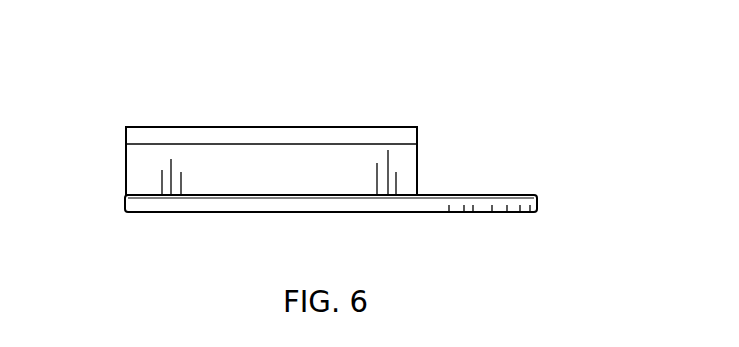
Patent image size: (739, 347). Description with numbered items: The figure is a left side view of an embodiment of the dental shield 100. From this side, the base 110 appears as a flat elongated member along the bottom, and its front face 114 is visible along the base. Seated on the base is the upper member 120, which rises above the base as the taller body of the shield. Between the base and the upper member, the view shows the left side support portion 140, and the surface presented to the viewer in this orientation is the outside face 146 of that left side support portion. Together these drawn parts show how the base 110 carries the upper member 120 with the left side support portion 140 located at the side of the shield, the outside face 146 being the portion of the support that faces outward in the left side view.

The shield 100 is at (278, 146).
The base 110 is at (331, 199).
The front face 114 is at (464, 205).
The upper member 120 is at (391, 103).
The left side support portion 140 is at (147, 170).
The outside face 146 is at (280, 182).